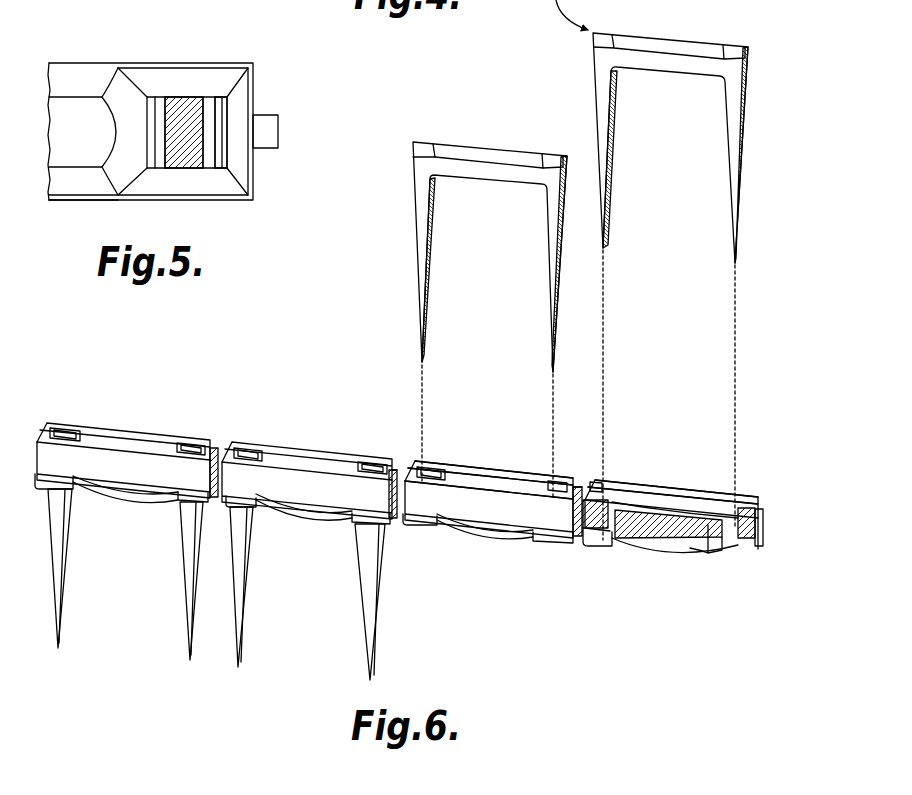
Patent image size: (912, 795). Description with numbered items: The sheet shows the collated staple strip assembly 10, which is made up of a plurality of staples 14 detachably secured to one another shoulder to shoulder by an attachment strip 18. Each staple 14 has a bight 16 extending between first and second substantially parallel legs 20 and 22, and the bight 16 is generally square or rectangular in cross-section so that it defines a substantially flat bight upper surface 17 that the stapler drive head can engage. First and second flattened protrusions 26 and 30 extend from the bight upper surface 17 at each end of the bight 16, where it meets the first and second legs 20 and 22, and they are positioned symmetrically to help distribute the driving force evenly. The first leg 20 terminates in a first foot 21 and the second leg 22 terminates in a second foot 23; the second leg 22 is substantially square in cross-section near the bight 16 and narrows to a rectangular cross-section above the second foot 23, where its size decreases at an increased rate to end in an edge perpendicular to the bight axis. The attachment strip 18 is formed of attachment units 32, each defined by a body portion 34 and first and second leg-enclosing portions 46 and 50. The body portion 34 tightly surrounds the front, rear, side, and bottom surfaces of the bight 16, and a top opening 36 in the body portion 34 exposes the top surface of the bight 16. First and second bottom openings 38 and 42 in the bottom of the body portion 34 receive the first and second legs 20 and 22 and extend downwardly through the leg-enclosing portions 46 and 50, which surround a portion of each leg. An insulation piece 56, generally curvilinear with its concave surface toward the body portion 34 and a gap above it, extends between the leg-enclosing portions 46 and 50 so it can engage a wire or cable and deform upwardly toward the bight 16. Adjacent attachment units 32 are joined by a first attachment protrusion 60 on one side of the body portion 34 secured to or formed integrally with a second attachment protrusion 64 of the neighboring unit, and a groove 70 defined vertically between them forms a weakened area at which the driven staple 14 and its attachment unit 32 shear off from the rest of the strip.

In FIG. 6, the collated staple strip assembly 10 is at (414, 507).
In FIG. 6, the staple 14 is at (471, 234).
In FIG. 6, the bight 16 is at (458, 142).
In FIG. 6, the bight upper surface 17 is at (492, 156).
In FIG. 6, the attachment strip 18 is at (719, 569).
In FIG. 6, the first leg 20 is at (418, 290).
In FIG. 6, the first foot 21 is at (418, 343).
In FIG. 5, the second leg 22 is at (218, 106).
In FIG. 6, the second leg 22 is at (552, 300).
In FIG. 6, the second foot 23 is at (552, 357).
In FIG. 6, the first flattened protrusion 26 is at (421, 143).
In FIG. 6, the second flattened protrusion 30 is at (552, 158).
In FIG. 6, the attachment unit 32 is at (459, 457).
In FIG. 5, the body portion 34 is at (88, 197).
In FIG. 6, the body portion 34 is at (490, 478).
In FIG. 6, the top opening 36 is at (512, 473).
In FIG. 6, the first bottom opening 38 is at (614, 502).
In FIG. 6, the second bottom opening 42 is at (731, 526).
In FIG. 6, the first leg-enclosing portion 46 is at (428, 526).
In FIG. 5, the second leg-enclosing portion 50 is at (210, 72).
In FIG. 6, the second leg-enclosing portion 50 is at (557, 531).
In FIG. 5, the insulation piece 56 is at (77, 103).
In FIG. 6, the insulation piece 56 is at (490, 540).
In FIG. 6, the first attachment protrusion 60 is at (405, 462).
In FIG. 5, the second attachment protrusion 64 is at (278, 125).
In FIG. 6, the second attachment protrusion 64 is at (578, 480).
In FIG. 6, the groove 70 is at (410, 520).